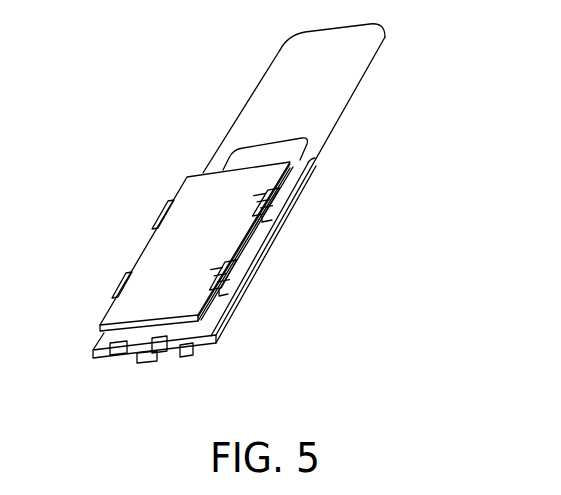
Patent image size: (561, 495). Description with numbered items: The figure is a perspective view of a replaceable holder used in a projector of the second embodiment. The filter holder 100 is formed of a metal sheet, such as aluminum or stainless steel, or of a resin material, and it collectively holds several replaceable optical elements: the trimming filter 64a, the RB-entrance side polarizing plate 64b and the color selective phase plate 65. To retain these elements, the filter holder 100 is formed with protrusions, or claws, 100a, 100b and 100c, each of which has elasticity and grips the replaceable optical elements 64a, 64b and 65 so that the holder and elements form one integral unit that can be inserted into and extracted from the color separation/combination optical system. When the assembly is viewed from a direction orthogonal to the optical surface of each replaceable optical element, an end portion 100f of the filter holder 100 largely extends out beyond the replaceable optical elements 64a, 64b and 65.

The filter holder 100 is at (368, 63).
The end portion 100f is at (277, 108).
The color selective phase plate 65 is at (198, 208).
The protrusion 100c is at (112, 283).
The protrusion 100a is at (270, 190).
The trimming filter 64a is at (250, 242).
The RB-entrance side polarizing plate 64b is at (247, 243).
The protrusion 100b is at (163, 347).